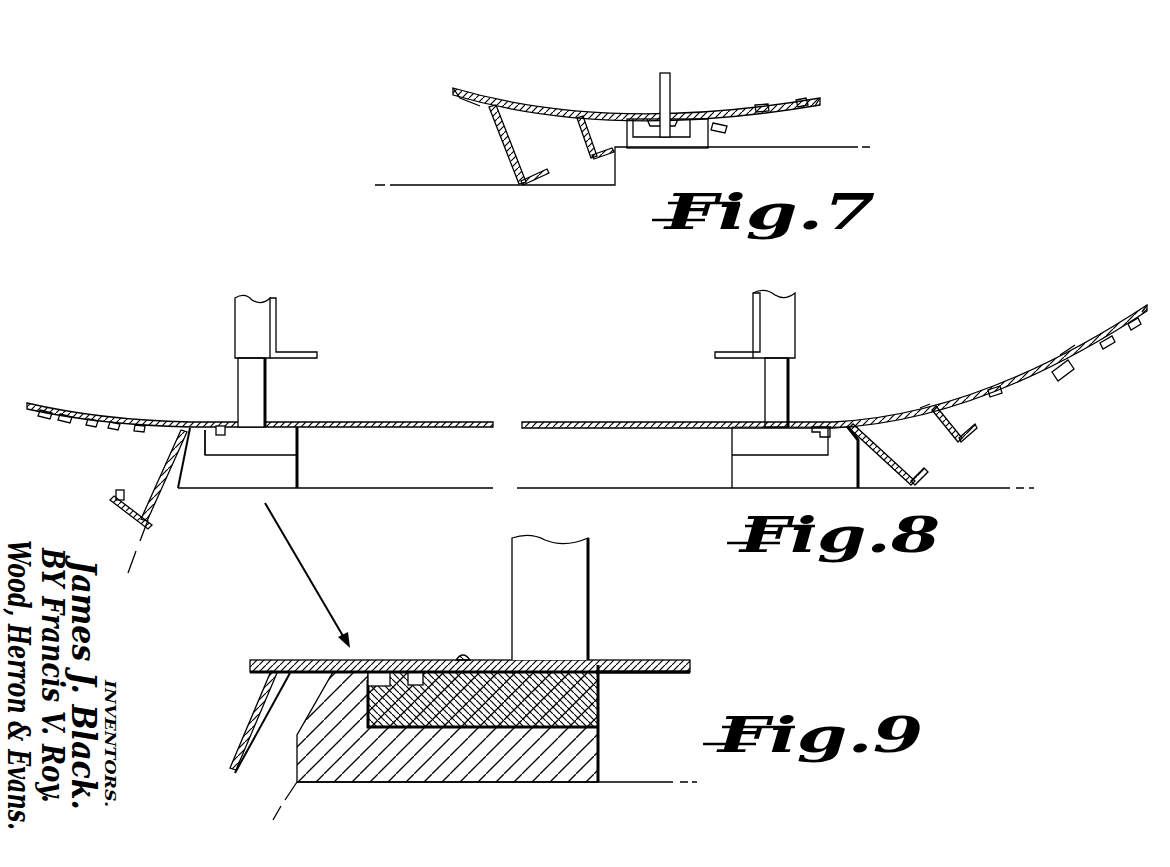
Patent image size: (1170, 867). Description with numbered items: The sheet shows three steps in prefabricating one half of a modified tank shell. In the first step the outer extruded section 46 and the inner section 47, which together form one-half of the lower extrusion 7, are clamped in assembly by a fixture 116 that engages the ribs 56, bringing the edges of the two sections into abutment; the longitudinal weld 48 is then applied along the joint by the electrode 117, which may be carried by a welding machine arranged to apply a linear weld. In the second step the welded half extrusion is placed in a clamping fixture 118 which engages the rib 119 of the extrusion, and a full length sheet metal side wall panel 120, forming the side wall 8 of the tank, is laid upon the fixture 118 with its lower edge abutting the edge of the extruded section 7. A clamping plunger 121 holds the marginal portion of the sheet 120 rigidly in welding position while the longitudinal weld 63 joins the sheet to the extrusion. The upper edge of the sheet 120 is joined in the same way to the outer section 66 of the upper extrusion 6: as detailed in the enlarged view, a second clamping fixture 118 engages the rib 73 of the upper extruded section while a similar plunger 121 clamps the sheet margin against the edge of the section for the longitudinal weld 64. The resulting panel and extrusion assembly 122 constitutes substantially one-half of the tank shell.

In FIG. 8, the upper extrusion 6 is at (98, 432).
In FIG. 7, the lower extrusion 7 is at (608, 104).
In FIG. 8, the lower extrusion 7 is at (1064, 340).
In FIG. 8, the side wall 8 is at (443, 414).
In FIG. 9, the side wall 8 is at (688, 650).
In FIG. 7, the outer section 46 is at (540, 110).
In FIG. 8, the outer section 46 is at (943, 408).
In FIG. 7, the inner section 47 is at (765, 104).
In FIG. 8, the inner section 47 is at (1106, 338).
In FIG. 8, the longitudinal weld line 48 is at (1018, 388).
In FIG. 7, the longitudinal rib 56 is at (805, 108).
In FIG. 8, the longitudinal rib 56 is at (1135, 326).
In FIG. 8, the weld 63 is at (818, 427).
In FIG. 8, the weld 64 is at (216, 426).
In FIG. 9, the weld 64 is at (462, 658).
In FIG. 8, the outer section 66 is at (92, 422).
In FIG. 9, the outer section 66 is at (268, 662).
In FIG. 8, the rib 73 is at (206, 430).
In FIG. 9, the rib 73 is at (376, 680).
In FIG. 7, the fixture 116 is at (707, 137).
In FIG. 7, the electrode 117 is at (672, 77).
In FIG. 8, the clamping fixture 118 is at (285, 471).
In FIG. 9, the clamping fixture 118 is at (578, 752).
In FIG. 7, the rib 119 is at (470, 106).
In FIG. 8, the rib 119 is at (830, 427).
In FIG. 8, the side wall panel 120 is at (566, 422).
In FIG. 9, the side wall panel 120 is at (642, 660).
In FIG. 8, the clamping plunger 121 is at (258, 382).
In FIG. 9, the clamping plunger 121 is at (580, 551).
In FIG. 8, the left hand assembly 122 is at (648, 390).